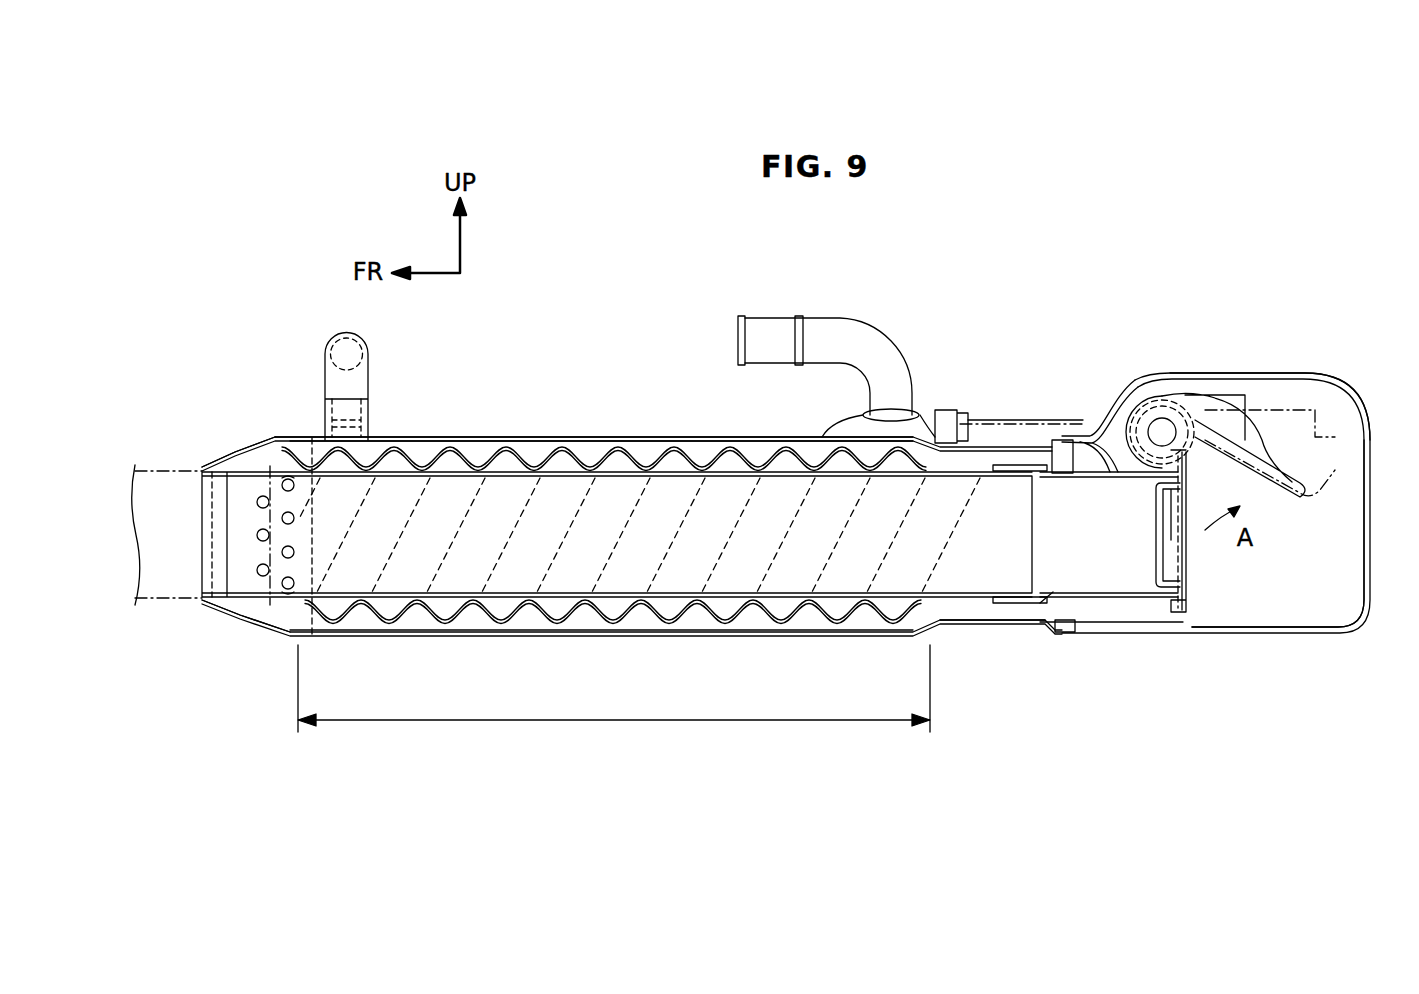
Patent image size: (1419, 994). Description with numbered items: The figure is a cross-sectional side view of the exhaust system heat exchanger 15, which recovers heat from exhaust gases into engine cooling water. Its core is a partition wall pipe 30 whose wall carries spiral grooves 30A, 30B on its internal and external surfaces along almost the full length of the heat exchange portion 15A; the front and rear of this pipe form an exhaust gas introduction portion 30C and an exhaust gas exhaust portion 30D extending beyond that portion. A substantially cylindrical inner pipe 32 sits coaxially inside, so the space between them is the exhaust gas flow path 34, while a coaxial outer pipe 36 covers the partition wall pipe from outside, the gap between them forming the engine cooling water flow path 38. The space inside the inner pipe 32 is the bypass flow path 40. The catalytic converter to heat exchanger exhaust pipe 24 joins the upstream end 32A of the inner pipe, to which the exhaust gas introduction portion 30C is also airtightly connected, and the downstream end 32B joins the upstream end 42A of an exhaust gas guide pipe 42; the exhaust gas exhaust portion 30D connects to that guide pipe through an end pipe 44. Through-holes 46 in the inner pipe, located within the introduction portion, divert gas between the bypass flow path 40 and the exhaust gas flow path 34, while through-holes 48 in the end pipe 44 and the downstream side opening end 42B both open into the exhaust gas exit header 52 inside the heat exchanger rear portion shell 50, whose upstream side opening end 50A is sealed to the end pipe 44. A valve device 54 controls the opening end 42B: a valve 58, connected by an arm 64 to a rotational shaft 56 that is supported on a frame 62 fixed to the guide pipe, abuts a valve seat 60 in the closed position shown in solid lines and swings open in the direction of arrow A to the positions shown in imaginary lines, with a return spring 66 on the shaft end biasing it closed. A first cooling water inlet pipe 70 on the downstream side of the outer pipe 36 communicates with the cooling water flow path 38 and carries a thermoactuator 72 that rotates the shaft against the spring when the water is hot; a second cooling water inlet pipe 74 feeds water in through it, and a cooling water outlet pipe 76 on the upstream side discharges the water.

The exhaust system heat exchanger 15 is at (620, 236).
The catalytic converter to heat exchanger exhaust pipe 24 is at (155, 466).
The partition wall pipe 30 is at (708, 612).
The spiral groove 30A is at (648, 604).
The spiral groove 30B is at (562, 612).
The exhaust gas introduction portion 30C is at (258, 445).
The exhaust gas exhaust portion 30D is at (992, 634).
The inner pipe 32 is at (625, 472).
The upstream end of inner pipe 32A is at (245, 615).
The downstream end of inner pipe 32B is at (988, 485).
The exhaust gas flow path 34 is at (455, 450).
The outer pipe 36 is at (585, 437).
The engine cooling water flow path 38 is at (530, 462).
The bypass flow path 40 is at (788, 548).
The exhaust gas guide pipe 42 is at (1135, 603).
The upstream end of exhaust gas guide pipe 42A is at (1040, 478).
The downstream side opening end 42B is at (1170, 607).
The end pipe 44 is at (1050, 628).
The through-holes 46 is at (256, 536).
The through-holes 48 is at (1073, 432).
The heat exchanger rear portion shell 50 is at (1258, 635).
The upstream side opening end 50A is at (1075, 436).
The exhaust gas exit header 52 is at (1240, 596).
The valve device 54 is at (1280, 373).
The rotational shaft 56 is at (1162, 418).
The valve 58 is at (1193, 575).
The valve seat 60 is at (1190, 615).
The frame 62 is at (1160, 405).
The arm 64 is at (1213, 485).
The return spring 66 is at (1135, 410).
The first cooling water inlet pipe 70 is at (935, 413).
The thermoactuator 72 is at (1010, 430).
The second cooling water inlet pipe 74 is at (855, 335).
The cooling water outlet pipe 76 is at (362, 383).
The heat exchange portion 15A is at (614, 702).